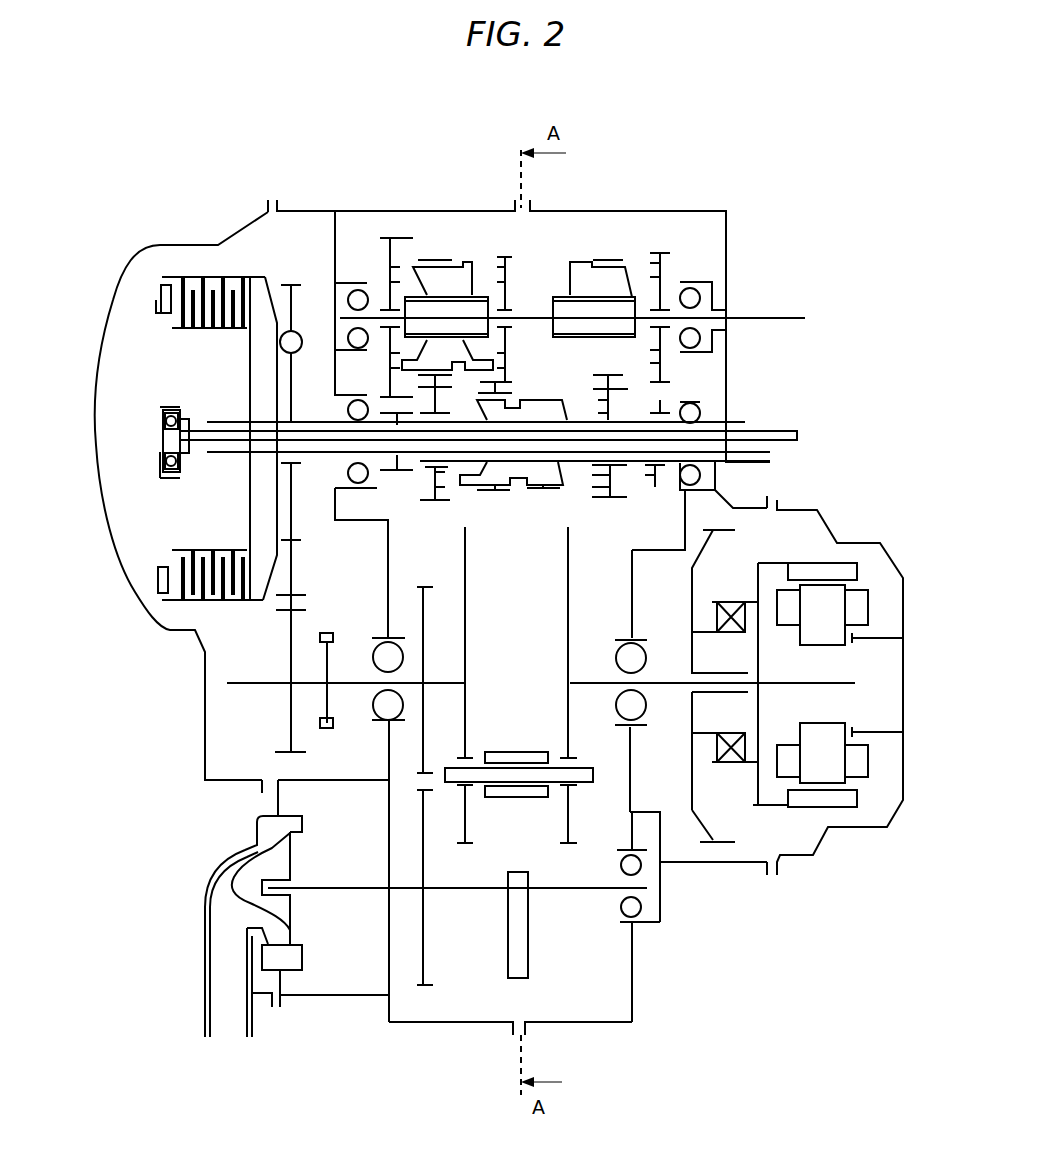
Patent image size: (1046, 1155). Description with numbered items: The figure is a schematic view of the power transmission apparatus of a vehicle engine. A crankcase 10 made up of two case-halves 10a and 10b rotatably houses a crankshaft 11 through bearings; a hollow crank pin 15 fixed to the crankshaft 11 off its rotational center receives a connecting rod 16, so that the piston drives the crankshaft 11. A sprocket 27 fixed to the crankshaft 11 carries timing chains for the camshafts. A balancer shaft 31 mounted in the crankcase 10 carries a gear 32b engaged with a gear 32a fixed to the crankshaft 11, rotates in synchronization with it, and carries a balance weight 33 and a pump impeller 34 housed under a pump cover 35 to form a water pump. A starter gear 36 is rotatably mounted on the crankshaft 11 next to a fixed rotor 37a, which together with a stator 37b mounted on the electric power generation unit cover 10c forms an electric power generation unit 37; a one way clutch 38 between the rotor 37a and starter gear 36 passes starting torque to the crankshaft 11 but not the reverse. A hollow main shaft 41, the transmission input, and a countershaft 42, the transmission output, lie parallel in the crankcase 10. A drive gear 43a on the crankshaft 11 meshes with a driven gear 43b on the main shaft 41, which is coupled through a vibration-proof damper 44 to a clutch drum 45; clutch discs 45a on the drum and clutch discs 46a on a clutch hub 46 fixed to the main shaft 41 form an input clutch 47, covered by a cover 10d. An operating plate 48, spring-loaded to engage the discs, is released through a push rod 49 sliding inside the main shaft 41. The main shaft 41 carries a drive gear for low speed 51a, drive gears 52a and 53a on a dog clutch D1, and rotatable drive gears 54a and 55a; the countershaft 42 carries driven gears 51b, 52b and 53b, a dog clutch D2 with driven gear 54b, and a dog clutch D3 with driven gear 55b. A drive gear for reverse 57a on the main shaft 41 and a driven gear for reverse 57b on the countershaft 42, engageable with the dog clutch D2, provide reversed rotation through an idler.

The crankcase 10 is at (634, 963).
The case-half 10a is at (441, 1025).
The case-half 10b is at (590, 1025).
The electric power generation unit cover 10c is at (860, 830).
The cover 10d is at (100, 362).
The crankshaft 11 is at (443, 683).
The hollow crank pin 15 is at (568, 797).
The connecting rod 16 is at (500, 798).
The sprocket 27 is at (330, 734).
The balancer shaft 31 is at (466, 893).
The gear 32a is at (432, 598).
The gear 32b is at (432, 986).
The balance weight 33 is at (529, 960).
The pump impeller 34 is at (285, 935).
The pump cover 35 is at (205, 955).
The starter gear 36 is at (718, 845).
The electric power generation unit 37 is at (872, 582).
The rotor 37a is at (818, 571).
The stator 37b is at (842, 615).
The one way clutch 38 is at (740, 634).
The main shaft 41 is at (703, 422).
The countershaft 42 is at (750, 318).
The drive gear 43a is at (290, 738).
The driven gear 43b is at (300, 584).
The vibration-proof damper 44 is at (296, 330).
The clutch drum 45 is at (198, 276).
The clutch discs 45a is at (198, 318).
The clutch hub 46 is at (200, 548).
The clutch discs 46a is at (227, 330).
The input clutch 47 is at (190, 621).
The operating plate 48 is at (158, 497).
The push rod 49 is at (796, 431).
The drive gear for low speed 51a is at (396, 472).
The driven gear for low speed 51b is at (392, 237).
The drive gear for second speed 52a is at (543, 490).
The driven gear for second speed 52b is at (566, 284).
The drive gear for third speed 53a is at (495, 492).
The driven gear for third speed 53b is at (504, 257).
The drive gear for fourth speed 54a is at (612, 498).
The driven gear for fourth speed 54b is at (608, 260).
The drive gear for fifth speed 55a is at (436, 501).
The driven gear for fifth speed 55b is at (443, 260).
The drive gear for reverse operation 57a is at (655, 488).
The driven gear for reverse operation 57b is at (662, 254).
The dog clutch D1 is at (536, 485).
The dog clutch D2 is at (653, 255).
The dog clutch D3 is at (409, 256).